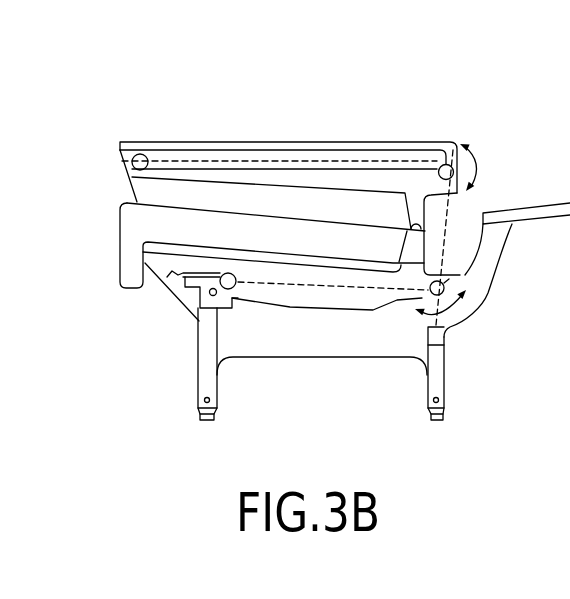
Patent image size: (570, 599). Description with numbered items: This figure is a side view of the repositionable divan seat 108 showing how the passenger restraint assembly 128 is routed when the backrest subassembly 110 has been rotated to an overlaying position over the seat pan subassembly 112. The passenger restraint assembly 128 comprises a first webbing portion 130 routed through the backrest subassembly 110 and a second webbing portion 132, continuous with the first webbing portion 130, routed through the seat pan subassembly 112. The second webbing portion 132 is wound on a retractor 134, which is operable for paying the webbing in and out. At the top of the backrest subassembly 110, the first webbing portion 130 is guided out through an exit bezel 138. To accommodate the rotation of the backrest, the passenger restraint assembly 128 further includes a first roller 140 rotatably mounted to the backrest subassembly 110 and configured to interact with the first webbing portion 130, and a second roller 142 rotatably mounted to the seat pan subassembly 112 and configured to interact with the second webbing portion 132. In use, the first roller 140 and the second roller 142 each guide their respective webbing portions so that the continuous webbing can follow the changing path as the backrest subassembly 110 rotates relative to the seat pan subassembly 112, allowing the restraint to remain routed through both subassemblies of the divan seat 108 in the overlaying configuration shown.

The divan seat 108 is at (198, 74).
The backrest subassembly 110 is at (140, 193).
The seat pan subassembly 112 is at (130, 252).
The passenger restraint assembly 128 is at (470, 207).
The first webbing portion 130 is at (313, 158).
The second webbing portion 132 is at (302, 288).
The retractor 134 is at (198, 320).
The exit bezel 138 is at (130, 142).
The first roller 140 is at (445, 142).
The second roller 142 is at (440, 294).